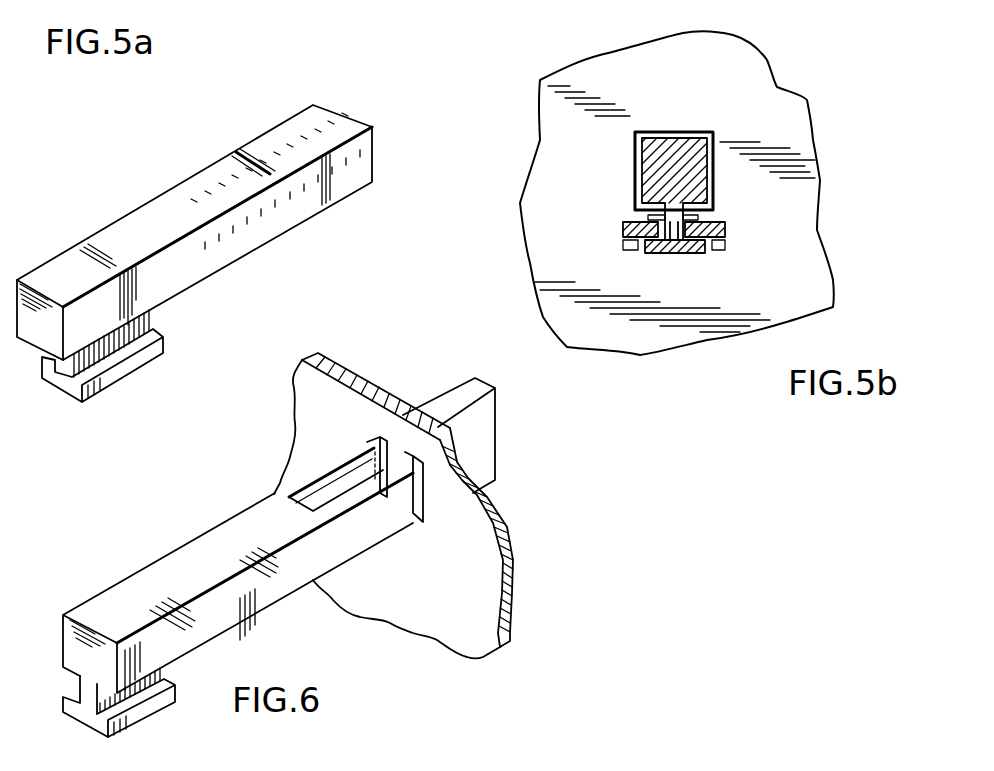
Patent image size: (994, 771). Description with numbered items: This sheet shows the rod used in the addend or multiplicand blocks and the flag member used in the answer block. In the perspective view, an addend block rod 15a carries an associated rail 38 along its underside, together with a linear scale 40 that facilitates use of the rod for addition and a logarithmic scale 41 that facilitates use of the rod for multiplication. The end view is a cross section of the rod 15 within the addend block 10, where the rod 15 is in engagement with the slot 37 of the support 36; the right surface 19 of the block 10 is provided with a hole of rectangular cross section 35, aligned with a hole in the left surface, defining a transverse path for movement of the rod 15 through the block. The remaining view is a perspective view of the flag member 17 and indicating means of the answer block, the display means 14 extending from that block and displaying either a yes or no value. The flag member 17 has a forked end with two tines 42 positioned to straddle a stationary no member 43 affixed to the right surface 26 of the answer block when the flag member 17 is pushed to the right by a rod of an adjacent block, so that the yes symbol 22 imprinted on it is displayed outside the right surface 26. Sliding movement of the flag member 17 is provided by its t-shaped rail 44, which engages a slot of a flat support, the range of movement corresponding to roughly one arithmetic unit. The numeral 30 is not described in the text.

In FIG. 5B, the addend block 10 is at (805, 102).
In FIG. 6, the display means 14 is at (503, 483).
In FIG. 5B, the rod 15 is at (670, 147).
In FIG. 5A, the addend block rod 15a is at (200, 172).
In FIG. 6, the flag member 17 is at (190, 565).
In FIG. 5B, the right surface 19 is at (576, 262).
In FIG. 6, the yes symbol 22 is at (410, 520).
In FIG. 6, the right surface 26 is at (371, 436).
In FIG. 6, the sheet reference 30 is at (616, 759).
In FIG. 5B, the hole of rectangular cross section 35 is at (643, 163).
In FIG. 5B, the support 36 is at (713, 222).
In FIG. 5B, the slot 37 is at (673, 242).
In FIG. 5A, the rail 38 is at (128, 370).
In FIG. 5B, the rail 38 is at (700, 253).
In FIG. 5A, the linear scale 40 is at (167, 198).
In FIG. 5A, the logarithmic scale 41 is at (253, 240).
In FIG. 6, the tines 42 is at (317, 470).
In FIG. 6, the no member 43 is at (487, 455).
In FIG. 6, the t-shaped rail 44 is at (128, 732).